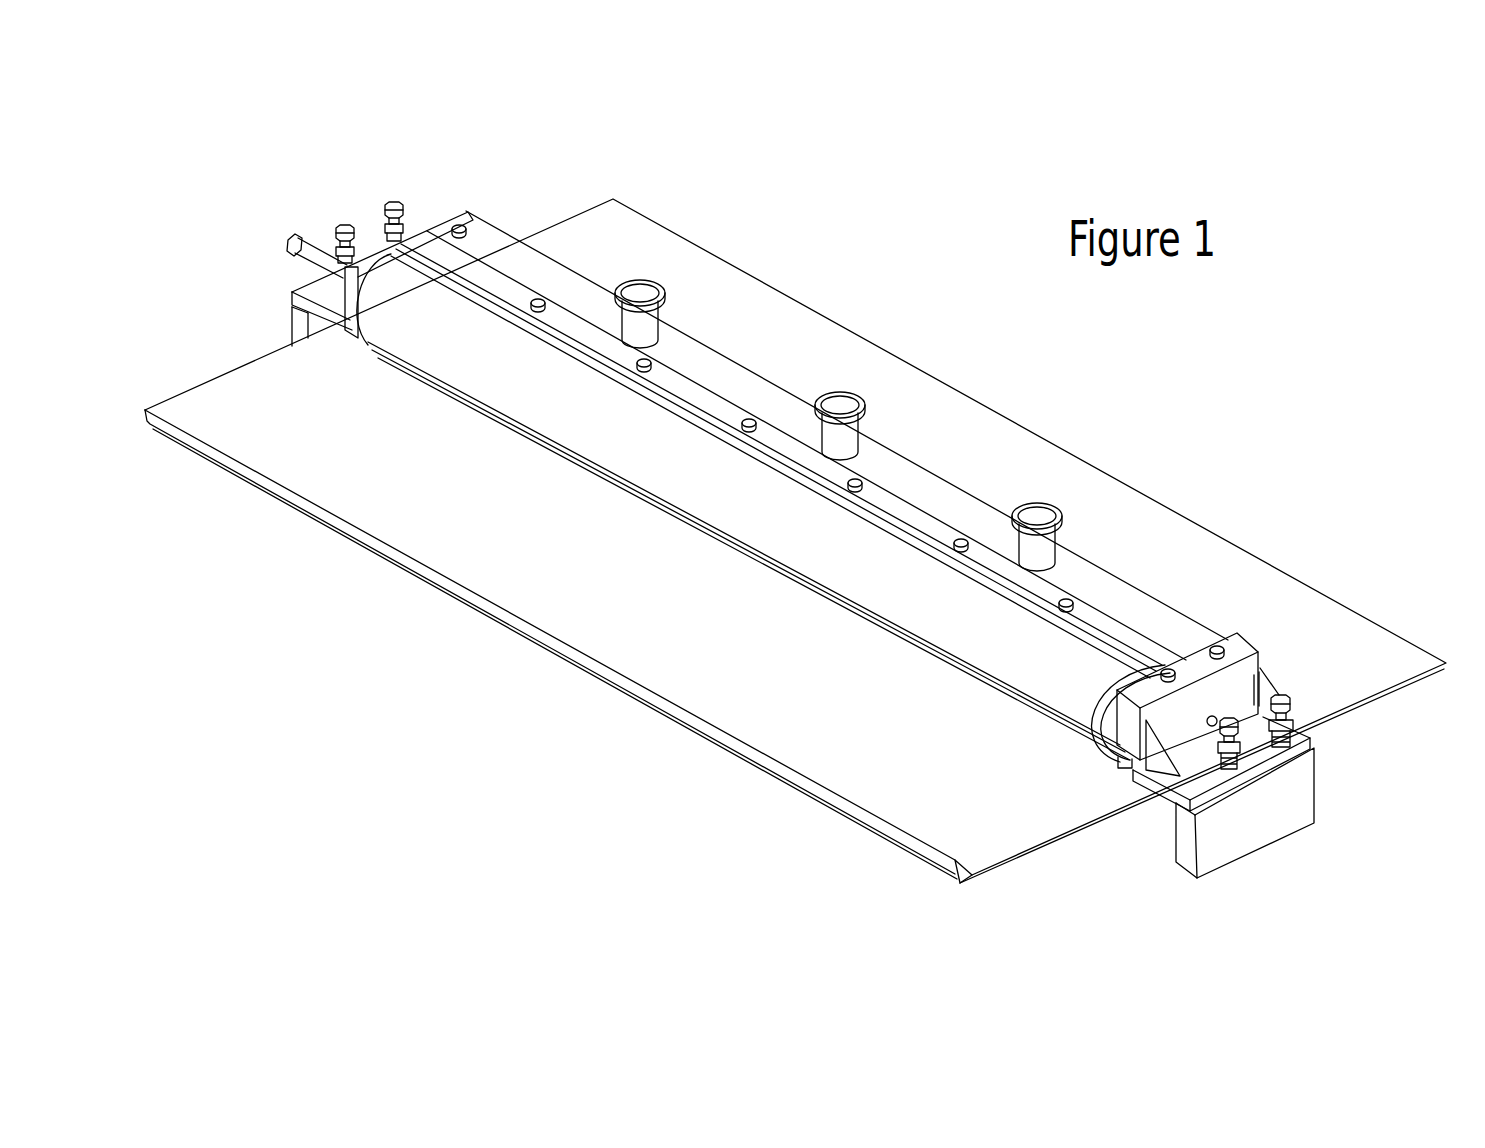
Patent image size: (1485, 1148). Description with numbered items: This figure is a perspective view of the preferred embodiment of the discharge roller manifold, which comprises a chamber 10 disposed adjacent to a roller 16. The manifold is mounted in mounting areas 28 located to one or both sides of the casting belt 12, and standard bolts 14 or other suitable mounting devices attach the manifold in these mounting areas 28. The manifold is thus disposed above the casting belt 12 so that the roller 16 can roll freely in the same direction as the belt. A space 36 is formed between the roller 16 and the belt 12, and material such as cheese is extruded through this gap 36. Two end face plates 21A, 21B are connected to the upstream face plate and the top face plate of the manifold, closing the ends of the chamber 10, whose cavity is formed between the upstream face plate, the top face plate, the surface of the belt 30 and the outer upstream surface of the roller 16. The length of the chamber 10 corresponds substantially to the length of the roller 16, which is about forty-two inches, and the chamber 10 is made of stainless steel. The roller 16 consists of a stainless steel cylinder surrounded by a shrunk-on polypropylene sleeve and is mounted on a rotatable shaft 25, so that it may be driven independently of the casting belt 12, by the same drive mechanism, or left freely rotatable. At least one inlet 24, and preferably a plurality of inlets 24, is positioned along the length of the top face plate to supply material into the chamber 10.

The chamber 10 is at (913, 451).
The casting belt 12 is at (898, 742).
The bolts 14 is at (394, 204).
The roller 16 is at (407, 343).
The end face plate 21A is at (440, 217).
The end face plate 21B is at (1181, 720).
The inlet 24 is at (661, 286).
The rotatable shaft 25 is at (288, 243).
The mounting areas 28 is at (365, 213).
The surface of the belt 30 is at (574, 645).
The space 36 is at (1078, 745).